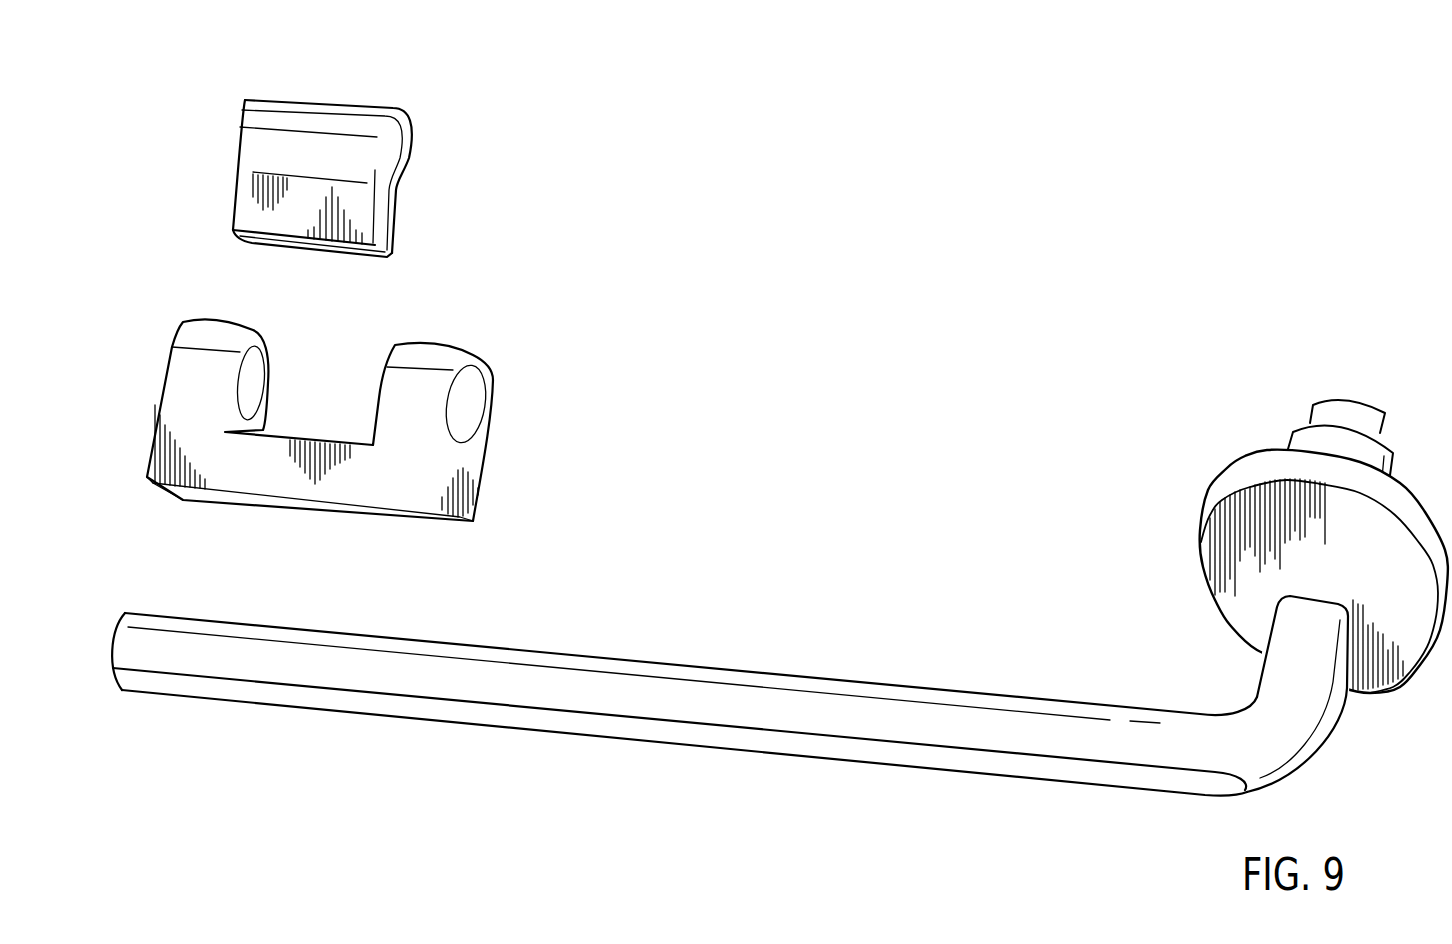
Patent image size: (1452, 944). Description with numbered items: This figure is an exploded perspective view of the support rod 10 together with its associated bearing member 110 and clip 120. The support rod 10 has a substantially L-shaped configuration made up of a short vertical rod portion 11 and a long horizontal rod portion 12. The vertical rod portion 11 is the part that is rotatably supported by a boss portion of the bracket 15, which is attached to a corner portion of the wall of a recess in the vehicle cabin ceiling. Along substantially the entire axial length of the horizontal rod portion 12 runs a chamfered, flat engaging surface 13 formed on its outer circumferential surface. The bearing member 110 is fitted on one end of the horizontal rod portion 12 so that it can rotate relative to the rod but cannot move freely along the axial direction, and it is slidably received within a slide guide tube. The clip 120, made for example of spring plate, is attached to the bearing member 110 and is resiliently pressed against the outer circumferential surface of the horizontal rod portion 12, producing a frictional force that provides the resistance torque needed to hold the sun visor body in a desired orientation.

The support rod 10 is at (780, 608).
The vertical rod portion 11 is at (1320, 652).
The horizontal rod portion 12 is at (597, 665).
The engaging surface 13 is at (635, 732).
The bracket 15 is at (1233, 532).
The bearing member 110 is at (445, 343).
The clip 120 is at (312, 100).